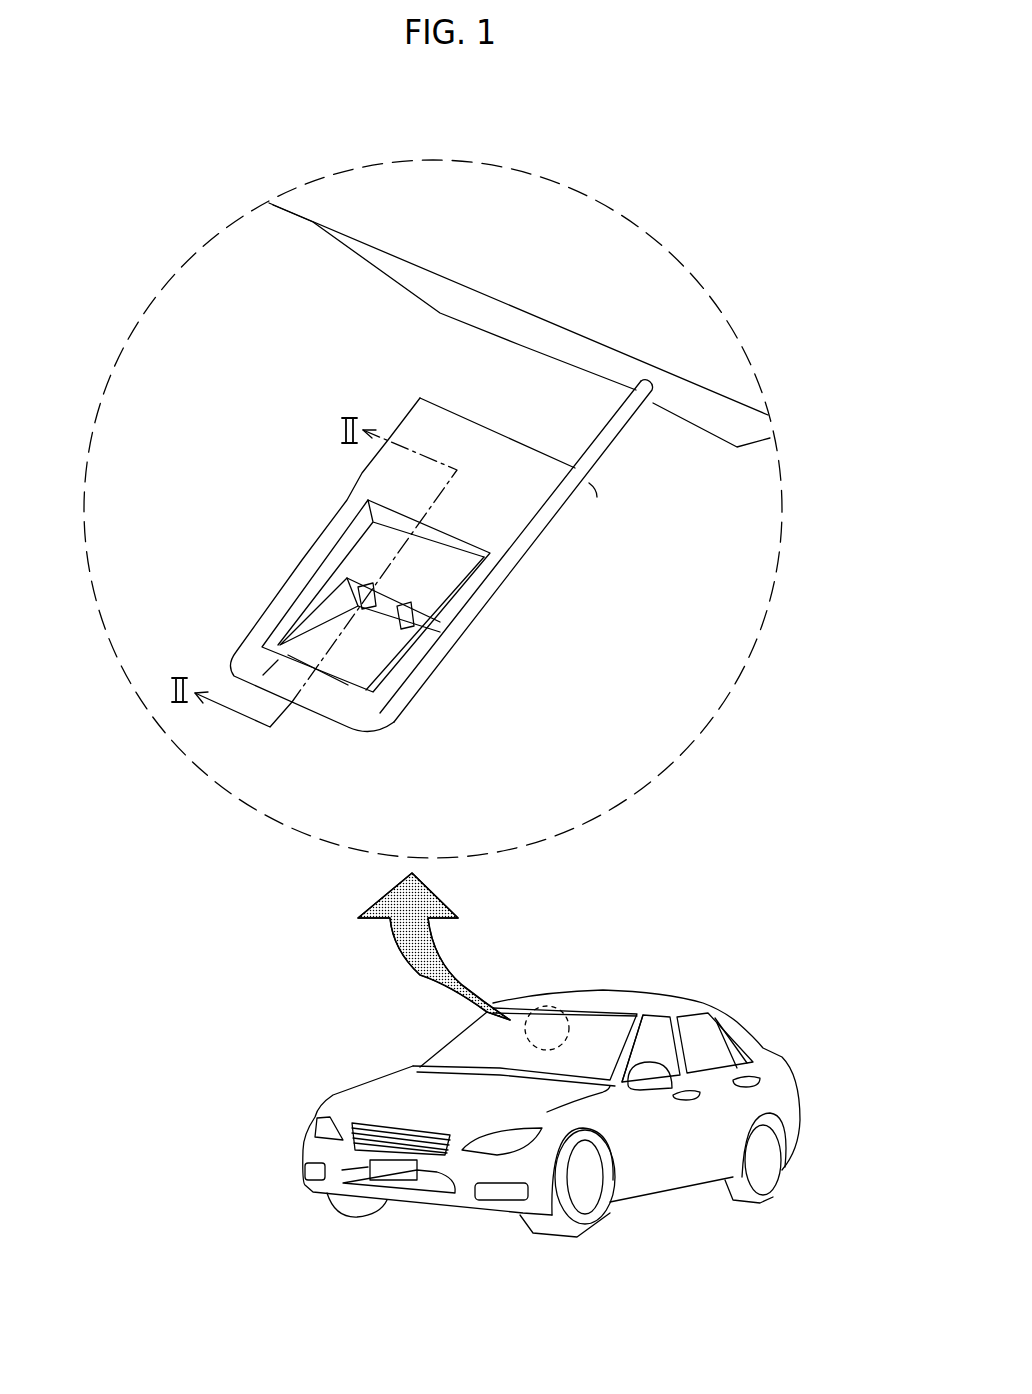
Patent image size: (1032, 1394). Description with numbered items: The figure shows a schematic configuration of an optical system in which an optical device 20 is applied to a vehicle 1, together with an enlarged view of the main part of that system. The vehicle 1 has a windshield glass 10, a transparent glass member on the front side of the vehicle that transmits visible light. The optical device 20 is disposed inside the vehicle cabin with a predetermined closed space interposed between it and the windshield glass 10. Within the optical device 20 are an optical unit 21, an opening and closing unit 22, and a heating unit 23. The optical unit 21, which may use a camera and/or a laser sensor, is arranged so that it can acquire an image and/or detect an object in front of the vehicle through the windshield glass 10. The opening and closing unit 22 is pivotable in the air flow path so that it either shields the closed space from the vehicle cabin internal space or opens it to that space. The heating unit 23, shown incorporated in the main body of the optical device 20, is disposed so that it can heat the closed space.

The vehicle 1 is at (802, 1098).
The windshield glass 10 is at (421, 708).
The optical device 20 is at (570, 530).
The optical unit 21 is at (470, 640).
The opening and closing unit 22 is at (393, 717).
The heating unit 23 is at (383, 657).